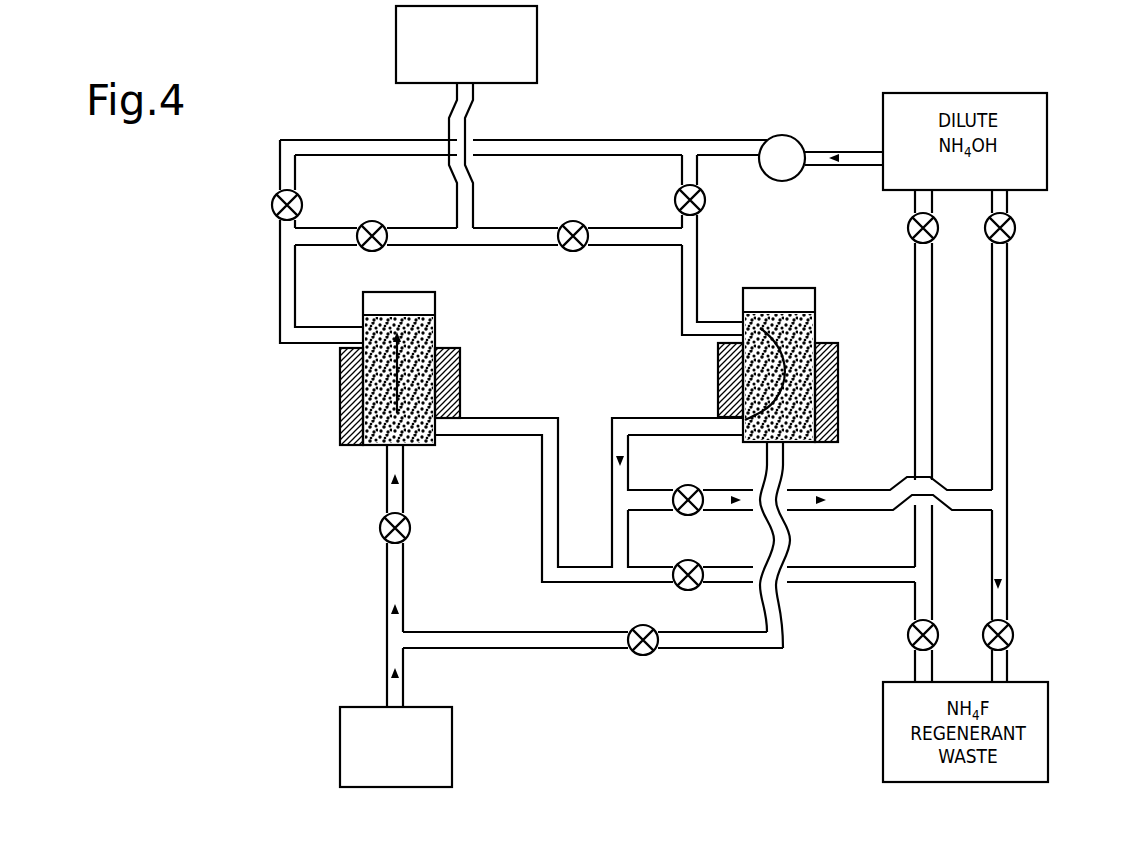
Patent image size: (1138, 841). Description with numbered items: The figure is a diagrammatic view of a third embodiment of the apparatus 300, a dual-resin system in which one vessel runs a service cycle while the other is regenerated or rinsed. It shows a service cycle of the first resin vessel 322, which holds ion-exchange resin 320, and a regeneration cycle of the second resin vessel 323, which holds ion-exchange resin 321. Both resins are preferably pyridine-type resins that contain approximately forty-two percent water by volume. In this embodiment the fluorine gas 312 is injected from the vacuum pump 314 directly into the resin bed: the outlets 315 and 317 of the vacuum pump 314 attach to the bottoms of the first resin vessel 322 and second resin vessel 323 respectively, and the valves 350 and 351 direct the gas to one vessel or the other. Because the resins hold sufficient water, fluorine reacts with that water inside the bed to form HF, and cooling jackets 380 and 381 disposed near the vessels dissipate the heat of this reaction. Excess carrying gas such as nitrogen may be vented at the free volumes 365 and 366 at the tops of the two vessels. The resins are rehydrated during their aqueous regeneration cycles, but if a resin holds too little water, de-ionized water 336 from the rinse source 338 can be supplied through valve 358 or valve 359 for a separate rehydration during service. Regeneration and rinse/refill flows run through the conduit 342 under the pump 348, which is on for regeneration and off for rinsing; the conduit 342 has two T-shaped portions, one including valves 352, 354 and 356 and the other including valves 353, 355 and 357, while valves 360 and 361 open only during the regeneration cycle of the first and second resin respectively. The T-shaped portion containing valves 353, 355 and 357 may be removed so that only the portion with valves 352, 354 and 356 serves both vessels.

The apparatus 300 is at (718, 54).
The F2 gas 312 is at (405, 585).
The vacuum pump 314 is at (452, 749).
The outlet 315 is at (405, 474).
The outlet 317 is at (766, 448).
The ion-exchange resin 320 is at (387, 433).
The ion-exchange resin 321 is at (797, 433).
The first resin vessel 322 is at (437, 328).
The second resin vessel 323 is at (815, 322).
The de-ionized water 336 is at (426, 62).
The rinse source 338 is at (540, 23).
The conduit 342 is at (1008, 446).
The pump 348 is at (770, 181).
The valve 350 is at (380, 533).
The valve 351 is at (640, 655).
The valve 352 is at (678, 589).
The valve 353 is at (690, 516).
The valve 354 is at (907, 630).
The valve 355 is at (1016, 626).
The valve 356 is at (908, 226).
The valve 357 is at (1013, 240).
The valve 358 is at (377, 251).
The valve 359 is at (563, 249).
The valve 360 is at (300, 198).
The valve 361 is at (676, 193).
The free volume 365 is at (400, 292).
The free volume 366 is at (788, 288).
The cooling jacket 380 is at (340, 389).
The cooling jacket 381 is at (718, 376).